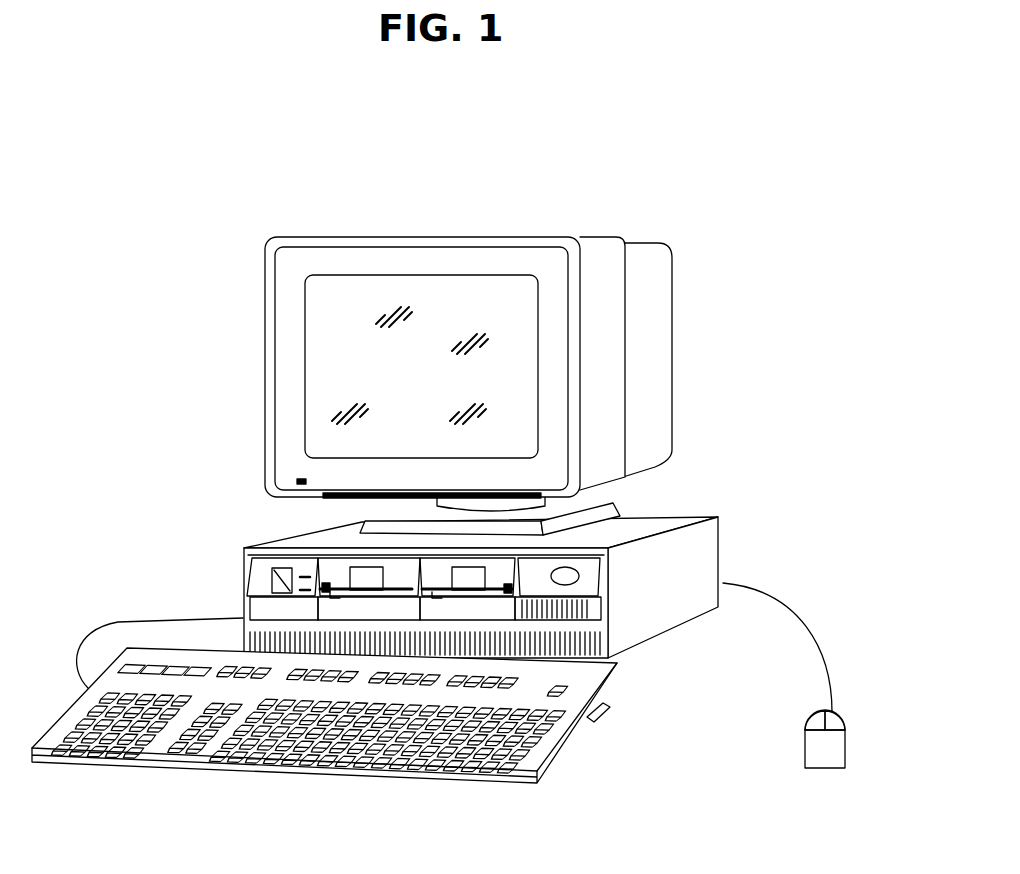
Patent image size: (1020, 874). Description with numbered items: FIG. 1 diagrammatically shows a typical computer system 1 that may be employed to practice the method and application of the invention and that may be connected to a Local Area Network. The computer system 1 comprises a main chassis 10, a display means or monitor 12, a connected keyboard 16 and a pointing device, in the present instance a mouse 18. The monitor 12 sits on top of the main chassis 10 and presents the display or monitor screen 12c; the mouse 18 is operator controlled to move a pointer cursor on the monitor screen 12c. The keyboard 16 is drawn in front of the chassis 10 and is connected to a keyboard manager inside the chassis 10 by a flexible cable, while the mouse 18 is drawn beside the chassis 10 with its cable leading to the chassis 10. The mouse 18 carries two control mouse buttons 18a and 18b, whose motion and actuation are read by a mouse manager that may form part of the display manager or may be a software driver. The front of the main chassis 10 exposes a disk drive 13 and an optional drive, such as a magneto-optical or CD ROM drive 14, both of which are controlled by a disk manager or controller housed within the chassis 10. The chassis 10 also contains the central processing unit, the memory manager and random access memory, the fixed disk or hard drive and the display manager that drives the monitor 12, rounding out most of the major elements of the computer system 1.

The computer system 1 is at (556, 204).
The main chassis 10 is at (722, 515).
The monitor 12 is at (672, 293).
The monitor screen 12c is at (338, 357).
The disk drive 13 is at (373, 572).
The CD ROM drive 14 is at (495, 572).
The keyboard 16 is at (462, 783).
The mouse 18 is at (840, 768).
The mouse button 18a is at (810, 722).
The mouse button 18b is at (840, 722).